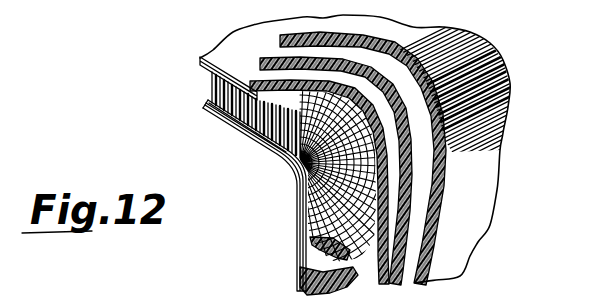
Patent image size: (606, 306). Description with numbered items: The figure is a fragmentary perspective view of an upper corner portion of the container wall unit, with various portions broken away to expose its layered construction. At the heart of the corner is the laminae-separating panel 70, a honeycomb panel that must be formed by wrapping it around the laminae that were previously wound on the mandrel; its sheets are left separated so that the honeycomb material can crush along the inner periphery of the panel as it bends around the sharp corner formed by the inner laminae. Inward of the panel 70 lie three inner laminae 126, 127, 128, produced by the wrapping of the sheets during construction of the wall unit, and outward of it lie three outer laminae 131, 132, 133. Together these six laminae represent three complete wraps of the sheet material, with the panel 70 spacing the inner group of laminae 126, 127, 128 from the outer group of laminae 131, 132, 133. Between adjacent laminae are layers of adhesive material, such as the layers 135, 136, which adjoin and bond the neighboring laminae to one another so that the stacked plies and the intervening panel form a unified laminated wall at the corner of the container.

The laminae-separating panel 70 is at (212, 80).
The inner lamina 128 is at (211, 98).
The inner lamina 127 is at (206, 105).
The inner lamina 126 is at (206, 110).
The outer lamina 131 is at (449, 257).
The outer lamina 132 is at (412, 228).
The outer lamina 133 is at (396, 186).
The layer of adhesive material 135 is at (300, 253).
The layer of adhesive material 136 is at (302, 278).